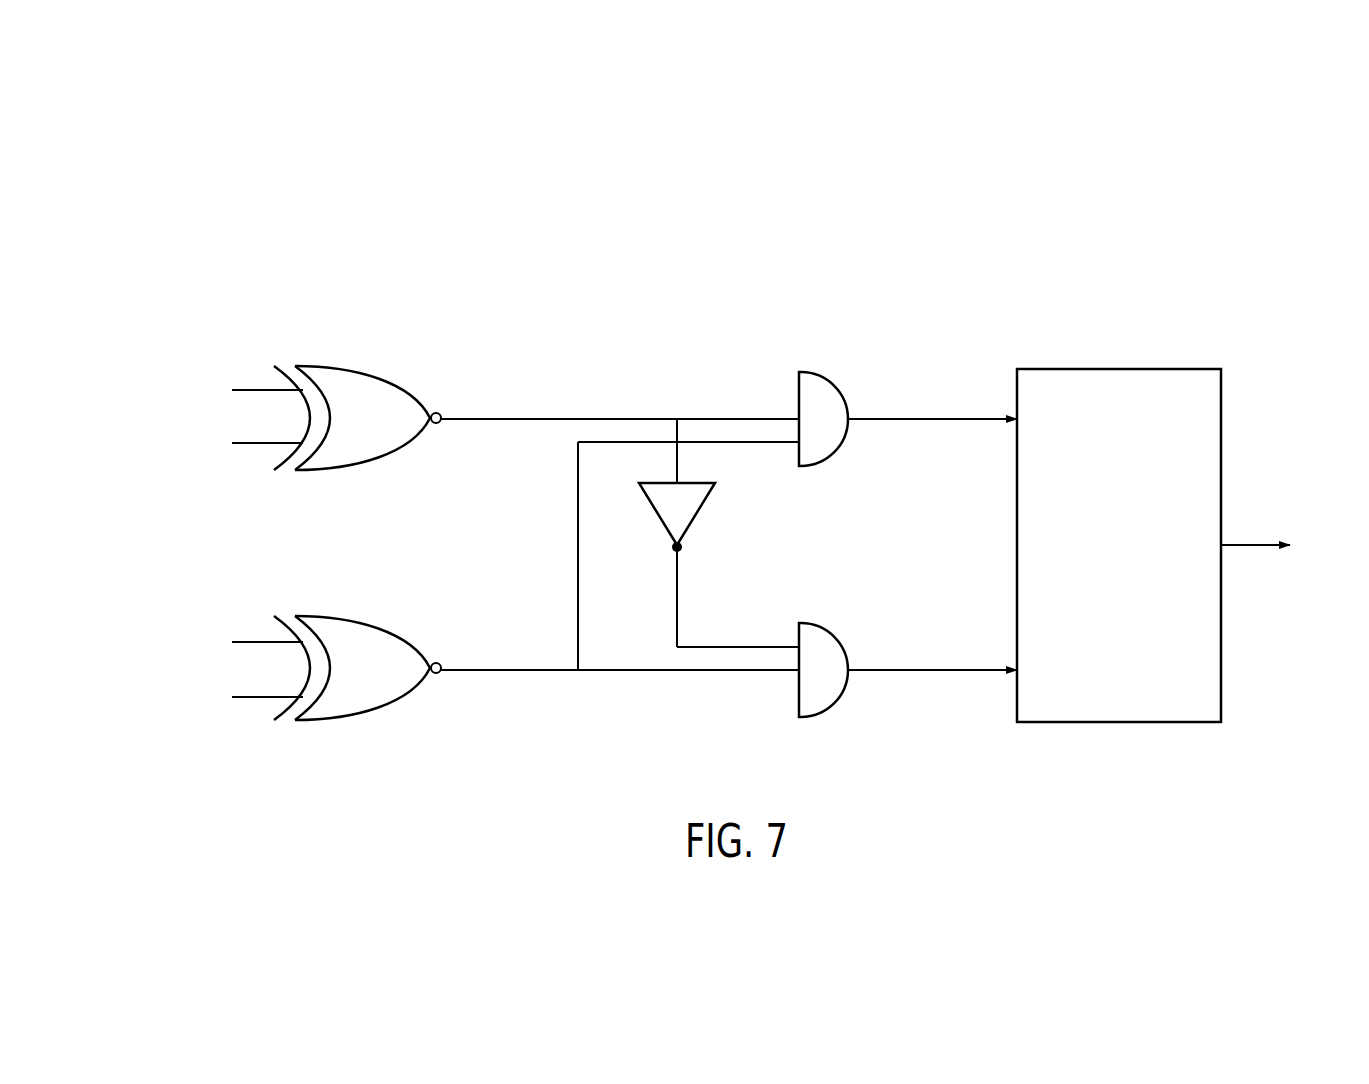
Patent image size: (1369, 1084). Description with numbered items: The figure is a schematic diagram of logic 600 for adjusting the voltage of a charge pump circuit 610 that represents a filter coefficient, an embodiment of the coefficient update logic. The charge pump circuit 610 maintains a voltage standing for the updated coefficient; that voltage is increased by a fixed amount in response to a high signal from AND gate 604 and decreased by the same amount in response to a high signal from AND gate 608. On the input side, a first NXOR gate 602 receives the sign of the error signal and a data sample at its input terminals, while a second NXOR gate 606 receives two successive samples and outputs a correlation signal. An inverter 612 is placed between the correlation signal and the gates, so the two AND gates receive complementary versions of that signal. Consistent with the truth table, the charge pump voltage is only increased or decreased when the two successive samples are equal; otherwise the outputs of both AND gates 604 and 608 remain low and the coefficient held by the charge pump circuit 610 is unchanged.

The logic 600 is at (1013, 250).
The first NXOR gate 602 is at (407, 383).
The AND gate 604 is at (843, 447).
The second NXOR gate 606 is at (407, 633).
The AND gate 608 is at (843, 698).
The charge pump circuit 610 is at (1175, 367).
The inverter 612 is at (697, 518).